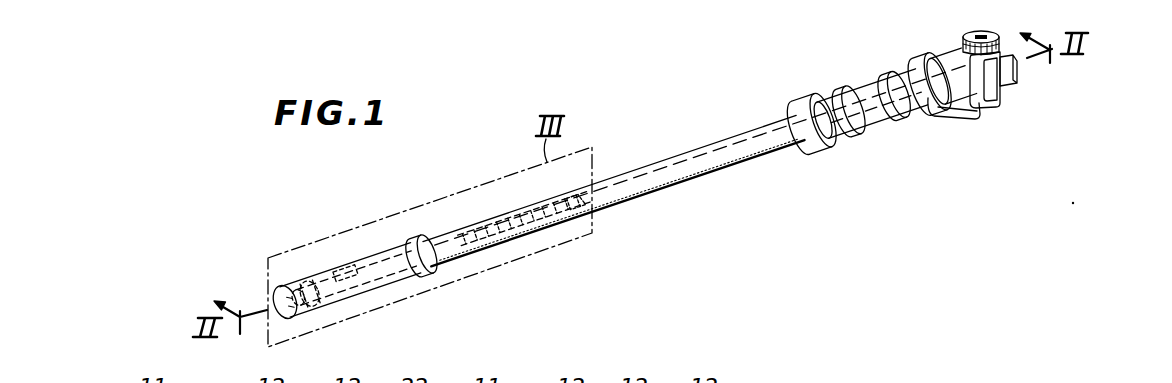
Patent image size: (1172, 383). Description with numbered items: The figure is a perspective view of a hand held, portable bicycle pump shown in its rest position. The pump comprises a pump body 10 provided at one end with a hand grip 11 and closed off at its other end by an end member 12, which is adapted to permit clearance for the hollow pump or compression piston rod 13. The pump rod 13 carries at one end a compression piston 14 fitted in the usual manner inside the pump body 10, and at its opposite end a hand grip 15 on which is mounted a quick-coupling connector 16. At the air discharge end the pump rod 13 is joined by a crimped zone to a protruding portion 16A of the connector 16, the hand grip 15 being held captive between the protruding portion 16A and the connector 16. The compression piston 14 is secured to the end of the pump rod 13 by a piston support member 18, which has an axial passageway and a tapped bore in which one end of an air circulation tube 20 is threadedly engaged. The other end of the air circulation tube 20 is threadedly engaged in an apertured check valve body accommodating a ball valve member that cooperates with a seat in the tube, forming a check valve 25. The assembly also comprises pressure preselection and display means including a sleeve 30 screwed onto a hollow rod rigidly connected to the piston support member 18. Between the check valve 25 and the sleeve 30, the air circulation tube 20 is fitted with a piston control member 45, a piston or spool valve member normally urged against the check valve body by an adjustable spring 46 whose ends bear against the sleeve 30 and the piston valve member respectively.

The pump body 10 is at (648, 157).
The hand grip 11 is at (358, 247).
The end member 12 is at (925, 68).
The pump rod 13 is at (727, 135).
The compression piston 14 is at (308, 288).
The hand grip 15 is at (828, 87).
The quick-coupling connector 16 is at (1021, 85).
The protruding portion 16A is at (978, 116).
The piston support member 18 is at (337, 262).
The air circulation tube 20 is at (481, 256).
The check valve 25 is at (586, 216).
The sleeve 30 is at (407, 244).
The piston control member 45 is at (558, 228).
The adjustable spring 46 is at (522, 222).